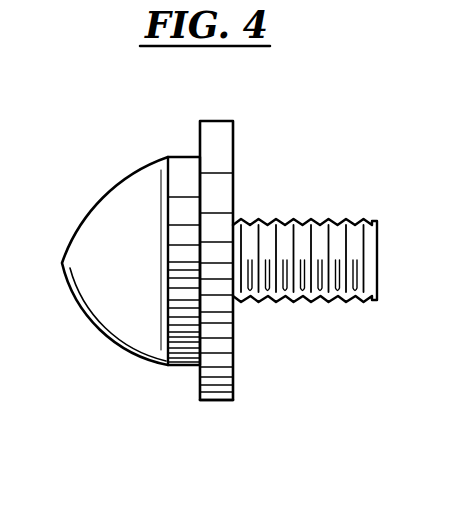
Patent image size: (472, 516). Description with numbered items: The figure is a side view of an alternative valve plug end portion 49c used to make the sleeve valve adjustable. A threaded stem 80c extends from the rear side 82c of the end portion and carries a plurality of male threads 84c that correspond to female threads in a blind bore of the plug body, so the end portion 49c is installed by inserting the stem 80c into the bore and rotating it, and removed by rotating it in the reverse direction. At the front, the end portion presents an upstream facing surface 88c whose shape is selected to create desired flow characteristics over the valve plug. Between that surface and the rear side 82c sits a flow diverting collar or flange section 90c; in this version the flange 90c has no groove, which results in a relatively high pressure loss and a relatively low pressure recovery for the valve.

The end portion 49c is at (301, 123).
The threaded stem 80c is at (377, 252).
The rear side 82c is at (233, 368).
The male threads 84c is at (339, 219).
The upstream facing surface 88c is at (82, 313).
The flange section 90c is at (215, 147).